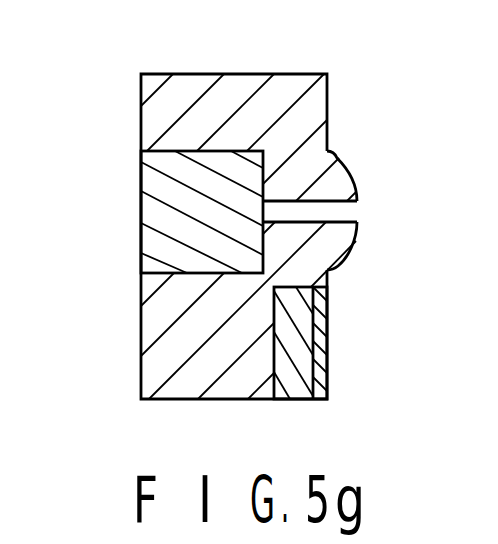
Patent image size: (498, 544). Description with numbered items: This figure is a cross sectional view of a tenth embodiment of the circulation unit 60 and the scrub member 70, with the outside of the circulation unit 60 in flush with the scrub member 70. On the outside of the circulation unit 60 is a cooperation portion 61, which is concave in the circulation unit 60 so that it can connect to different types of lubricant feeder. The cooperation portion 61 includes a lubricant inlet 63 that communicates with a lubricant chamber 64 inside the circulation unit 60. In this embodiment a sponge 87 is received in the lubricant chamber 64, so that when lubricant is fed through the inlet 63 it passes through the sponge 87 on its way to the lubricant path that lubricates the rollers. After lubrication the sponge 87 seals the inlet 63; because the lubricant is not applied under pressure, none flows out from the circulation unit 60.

The circulation unit 60 is at (188, 73).
The cooperation portion 61 is at (340, 161).
The lubricant inlet 63 is at (340, 213).
The lubricant chamber 64 is at (168, 150).
The sponge 87 is at (175, 223).
The scrub member 70 is at (327, 340).